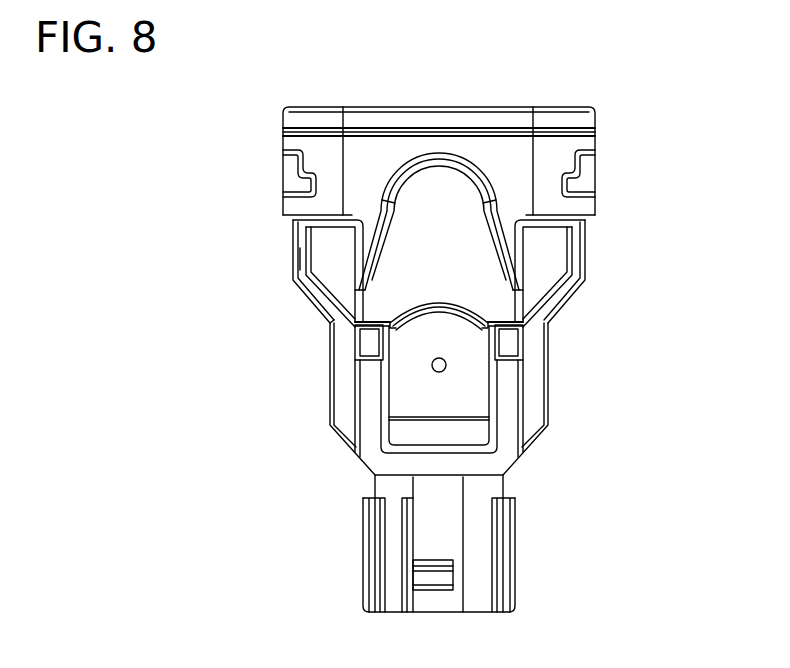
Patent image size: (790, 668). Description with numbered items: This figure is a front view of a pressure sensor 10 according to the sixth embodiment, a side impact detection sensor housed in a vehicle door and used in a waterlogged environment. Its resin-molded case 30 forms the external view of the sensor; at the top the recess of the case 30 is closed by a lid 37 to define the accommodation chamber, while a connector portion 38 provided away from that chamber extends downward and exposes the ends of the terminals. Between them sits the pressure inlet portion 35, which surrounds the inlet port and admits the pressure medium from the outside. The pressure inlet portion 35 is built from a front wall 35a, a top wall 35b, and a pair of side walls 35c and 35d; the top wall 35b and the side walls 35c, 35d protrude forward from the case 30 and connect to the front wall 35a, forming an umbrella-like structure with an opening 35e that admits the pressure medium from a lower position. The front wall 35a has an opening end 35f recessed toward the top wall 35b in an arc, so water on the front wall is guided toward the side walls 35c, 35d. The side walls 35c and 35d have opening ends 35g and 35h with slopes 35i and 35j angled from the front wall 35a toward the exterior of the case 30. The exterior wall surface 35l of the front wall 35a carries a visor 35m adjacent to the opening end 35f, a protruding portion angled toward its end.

The pressure sensor 10 is at (600, 141).
The case 30 is at (548, 380).
The pressure inlet portion 35 is at (404, 207).
The front wall 35a is at (422, 183).
The top wall 35b is at (462, 158).
The side wall 35c is at (378, 242).
The side wall 35d is at (522, 253).
The opening 35e is at (411, 327).
The opening end 35f is at (457, 326).
The opening end 35g is at (358, 338).
The opening end 35h is at (524, 337).
The slope 35i is at (362, 352).
The slope 35j is at (524, 350).
The exterior wall surface 35l is at (300, 242).
The visor 35m is at (398, 293).
The lid 37 is at (522, 126).
The connector portion 38 is at (480, 538).